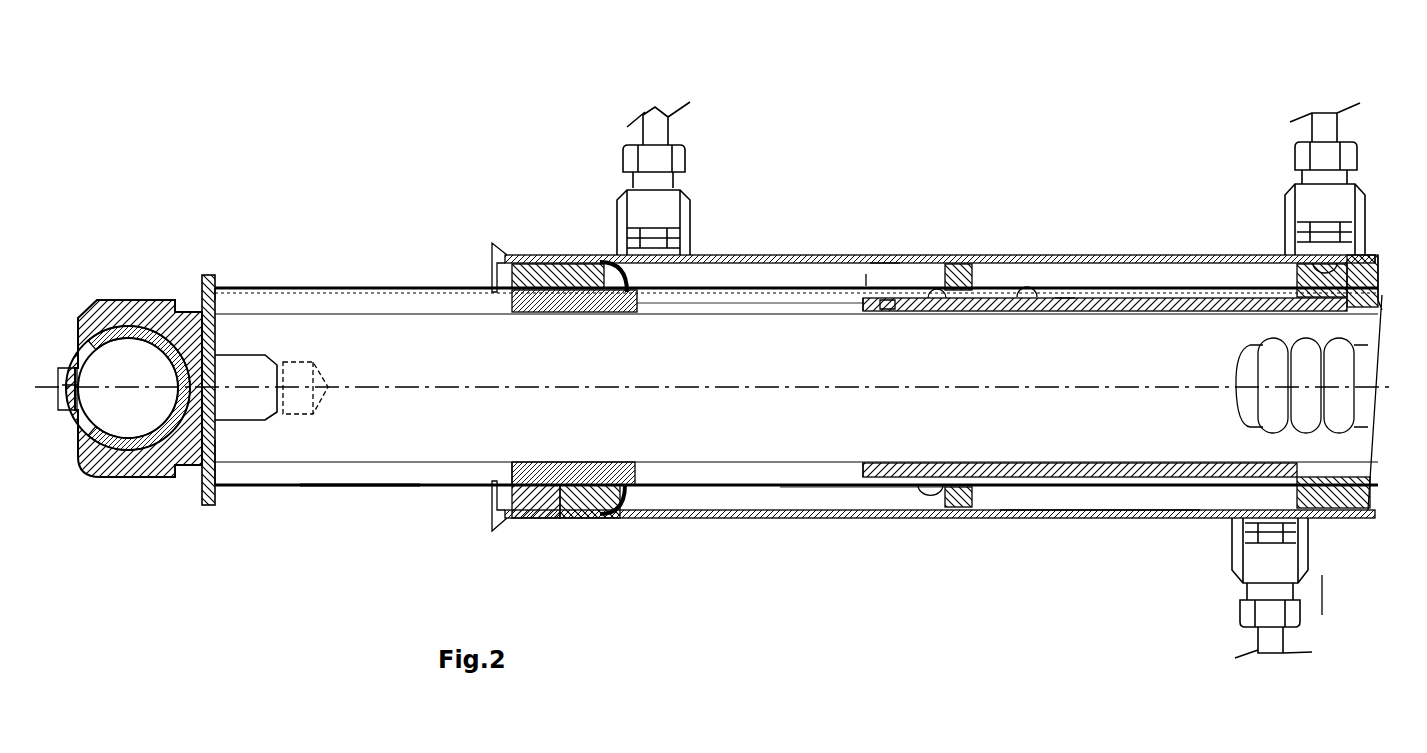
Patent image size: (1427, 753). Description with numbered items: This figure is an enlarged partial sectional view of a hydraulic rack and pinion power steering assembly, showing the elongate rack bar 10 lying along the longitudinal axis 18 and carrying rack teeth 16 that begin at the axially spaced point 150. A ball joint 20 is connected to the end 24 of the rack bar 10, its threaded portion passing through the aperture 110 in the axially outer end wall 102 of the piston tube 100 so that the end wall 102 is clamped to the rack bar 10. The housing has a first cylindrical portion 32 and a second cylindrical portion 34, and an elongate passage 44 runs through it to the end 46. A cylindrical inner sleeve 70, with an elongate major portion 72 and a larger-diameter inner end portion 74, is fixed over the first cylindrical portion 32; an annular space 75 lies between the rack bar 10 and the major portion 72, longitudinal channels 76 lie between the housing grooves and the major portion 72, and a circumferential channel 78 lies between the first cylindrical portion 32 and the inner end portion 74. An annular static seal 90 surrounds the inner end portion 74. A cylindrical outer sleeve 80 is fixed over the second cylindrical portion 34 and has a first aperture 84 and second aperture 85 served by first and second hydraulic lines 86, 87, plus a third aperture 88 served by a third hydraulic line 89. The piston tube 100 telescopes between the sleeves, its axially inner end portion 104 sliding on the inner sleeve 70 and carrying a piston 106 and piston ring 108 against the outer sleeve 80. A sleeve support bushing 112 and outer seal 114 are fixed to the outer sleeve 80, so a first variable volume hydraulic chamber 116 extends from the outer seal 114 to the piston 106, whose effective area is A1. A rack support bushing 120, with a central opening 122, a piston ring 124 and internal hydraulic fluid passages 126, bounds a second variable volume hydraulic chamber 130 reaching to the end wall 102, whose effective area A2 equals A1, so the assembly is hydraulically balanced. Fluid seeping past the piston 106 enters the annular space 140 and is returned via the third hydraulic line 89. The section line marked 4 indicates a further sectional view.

The rack bar 10 is at (378, 340).
The rack teeth 16 is at (1335, 405).
The longitudinal axis 18 is at (46, 386).
The ball joint 20 is at (113, 300).
The end of the rack bar 24 is at (205, 300).
The first cylindrical portion 32 is at (1125, 300).
The second cylindrical portion 34 is at (1368, 282).
The elongate passage 44 is at (905, 420).
The end of the housing 46 is at (826, 487).
The inner sleeve 70 is at (1086, 287).
The major portion 72 is at (1008, 314).
The inner end portion 74 is at (1242, 306).
The annular space 75 is at (783, 305).
The longitudinal channels 76 is at (1064, 300).
The circumferential channel 78 is at (1338, 312).
The outer sleeve 80 is at (887, 255).
The first aperture 84 is at (653, 258).
The second aperture 85 is at (1327, 268).
The first hydraulic line 86 is at (657, 133).
The second hydraulic line 87 is at (1322, 125).
The third aperture 88 is at (1262, 520).
The third hydraulic line 89 is at (1272, 640).
The static seal 90 is at (1297, 275).
The piston tube 100 is at (440, 290).
The axially outer end wall 102 is at (220, 445).
The axially inner end portion 104 is at (935, 492).
The piston 106 is at (1007, 262).
The piston ring 108 is at (963, 262).
The aperture 110 is at (243, 415).
The sleeve support bushing 112 is at (553, 252).
The outer seal 114 is at (605, 262).
The first variable volume hydraulic chamber 116 is at (866, 274).
The rack support bushing 120 is at (512, 470).
The central opening 122 is at (536, 465).
The piston ring 124 is at (563, 518).
The internal hydraulic fluid passages 126 is at (590, 468).
The second variable volume hydraulic chamber 130 is at (354, 485).
The annular space 140 is at (1138, 503).
The axially spaced point 150 is at (1232, 385).
The section line 4- 4 is at (1295, 157).
The surface area A1 is at (925, 262).
The surface area A2 is at (220, 298).